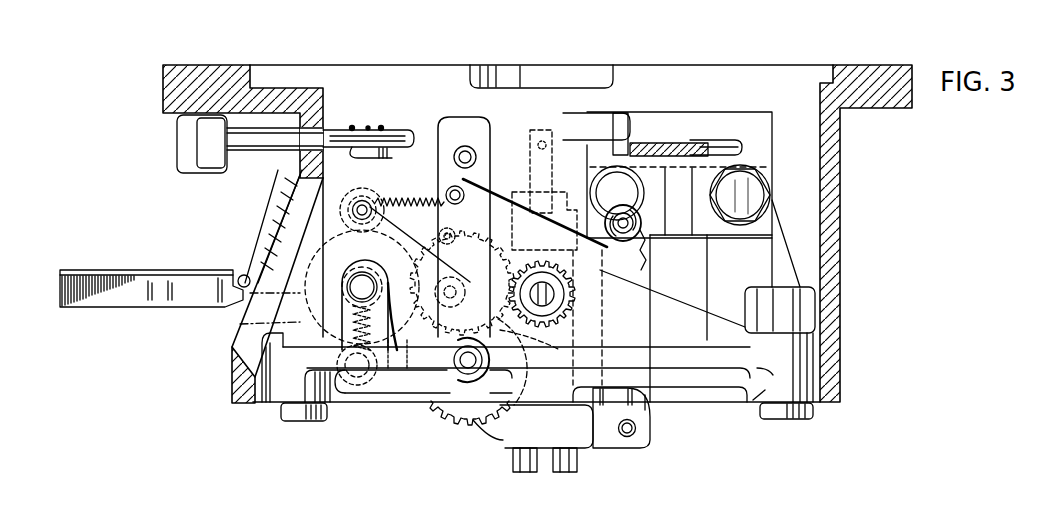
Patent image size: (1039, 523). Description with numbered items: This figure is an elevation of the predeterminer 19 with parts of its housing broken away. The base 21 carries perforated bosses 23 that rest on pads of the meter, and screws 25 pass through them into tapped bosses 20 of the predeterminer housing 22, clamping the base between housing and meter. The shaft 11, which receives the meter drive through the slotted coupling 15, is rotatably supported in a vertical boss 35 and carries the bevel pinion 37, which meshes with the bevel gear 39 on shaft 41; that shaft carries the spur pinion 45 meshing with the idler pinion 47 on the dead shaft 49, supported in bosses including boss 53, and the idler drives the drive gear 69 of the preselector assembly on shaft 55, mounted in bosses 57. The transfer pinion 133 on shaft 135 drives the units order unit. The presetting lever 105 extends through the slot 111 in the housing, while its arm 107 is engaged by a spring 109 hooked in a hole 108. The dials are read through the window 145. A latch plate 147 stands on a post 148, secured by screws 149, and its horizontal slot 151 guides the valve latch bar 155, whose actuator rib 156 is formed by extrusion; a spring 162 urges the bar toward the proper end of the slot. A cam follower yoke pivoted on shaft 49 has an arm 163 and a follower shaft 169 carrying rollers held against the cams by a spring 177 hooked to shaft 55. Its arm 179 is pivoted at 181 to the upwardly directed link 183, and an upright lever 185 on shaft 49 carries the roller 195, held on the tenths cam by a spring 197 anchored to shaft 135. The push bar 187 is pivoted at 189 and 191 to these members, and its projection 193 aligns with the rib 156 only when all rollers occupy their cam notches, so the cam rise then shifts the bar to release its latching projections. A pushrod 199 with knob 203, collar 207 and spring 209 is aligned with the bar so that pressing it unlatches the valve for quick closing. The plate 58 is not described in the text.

The shaft 11 is at (545, 128).
The slotted coupling 15 is at (526, 472).
The predeterminer 19 is at (845, 268).
The bosses 20 is at (281, 358).
The base 21 is at (702, 345).
The predeterminer housing 22 is at (833, 186).
The perforated bosses 23 is at (282, 406).
The screws 25 is at (287, 423).
The vertical boss 35 is at (566, 268).
The bevel pinion 37 is at (512, 197).
The bevel gear 39 is at (641, 262).
The shaft 41 is at (555, 296).
The spur pinion 45 is at (572, 309).
The idler pinion 47 is at (452, 425).
The dead shaft 49 is at (458, 360).
The boss 53 is at (466, 402).
The shaft 55 is at (362, 282).
The bosses 57 is at (346, 274).
The link plate 58 is at (394, 292).
The drive gear 69 is at (438, 238).
The presetting lever 105 is at (136, 306).
The arm 107 is at (455, 205).
The hole 108 is at (528, 345).
The spring 109 is at (456, 236).
The slot 111 is at (240, 324).
The transfer pinion 133 is at (370, 198).
The shaft 135 is at (356, 200).
The window 145 is at (277, 228).
The latch plate 147 is at (772, 129).
The post 148 is at (765, 247).
The screws 149 is at (745, 185).
The horizontal slot 151 is at (712, 140).
The valve latch or control bar 155 is at (745, 142).
The actuator rib 156 is at (680, 143).
The spring 162 is at (392, 158).
The arm 163 is at (395, 395).
The follower shaft 169 is at (350, 400).
The spring 177 is at (387, 307).
The arm 179 is at (593, 450).
The pivot 181 is at (636, 430).
The link 183 is at (650, 410).
The upright lever 185 is at (490, 162).
The push bar 187 is at (605, 118).
The pivot 189 is at (470, 150).
The pivot 191 is at (641, 223).
The projection 193 is at (627, 125).
The roller or cam follower 195 is at (450, 306).
The spring 197 is at (408, 199).
The pushrod 199 is at (410, 132).
The knob 203 is at (180, 150).
The collar 207 is at (352, 126).
The spring 209 is at (381, 126).